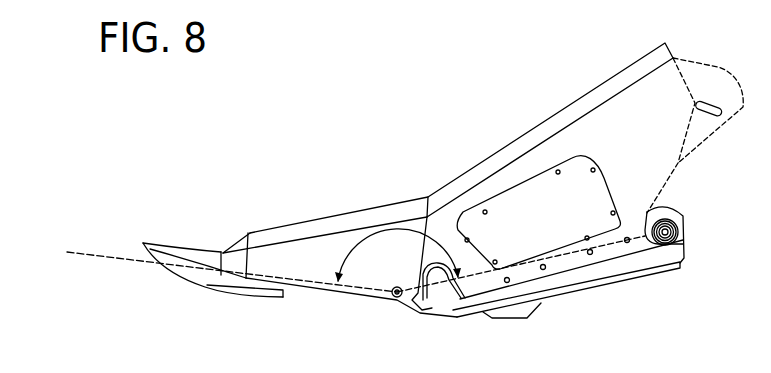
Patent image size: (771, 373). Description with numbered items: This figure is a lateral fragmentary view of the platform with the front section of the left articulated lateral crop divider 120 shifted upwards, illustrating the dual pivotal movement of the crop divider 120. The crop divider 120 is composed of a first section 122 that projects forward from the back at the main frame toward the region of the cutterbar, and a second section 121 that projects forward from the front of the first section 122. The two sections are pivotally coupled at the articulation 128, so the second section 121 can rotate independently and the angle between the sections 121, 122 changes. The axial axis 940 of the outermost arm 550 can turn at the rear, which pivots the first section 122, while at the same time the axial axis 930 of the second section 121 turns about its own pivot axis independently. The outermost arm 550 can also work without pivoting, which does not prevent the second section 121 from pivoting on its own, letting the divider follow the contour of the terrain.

The lateral crop divider 120 is at (443, 180).
The second section 121 is at (295, 224).
The first section 122 is at (541, 118).
The articulation 128 is at (391, 298).
The outermost arm 550 is at (574, 292).
The axial axis of the second section 930 is at (81, 248).
The axial axis of the outermost arm 940 is at (614, 250).